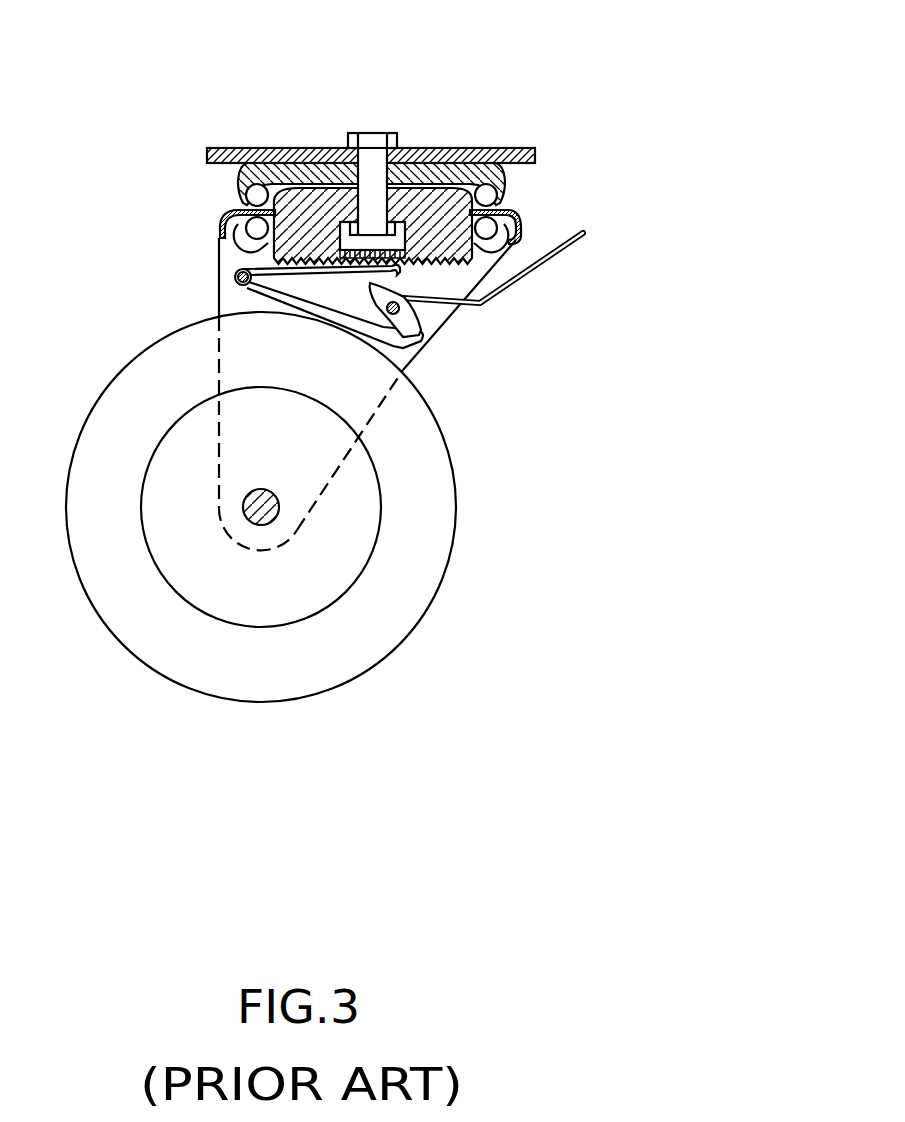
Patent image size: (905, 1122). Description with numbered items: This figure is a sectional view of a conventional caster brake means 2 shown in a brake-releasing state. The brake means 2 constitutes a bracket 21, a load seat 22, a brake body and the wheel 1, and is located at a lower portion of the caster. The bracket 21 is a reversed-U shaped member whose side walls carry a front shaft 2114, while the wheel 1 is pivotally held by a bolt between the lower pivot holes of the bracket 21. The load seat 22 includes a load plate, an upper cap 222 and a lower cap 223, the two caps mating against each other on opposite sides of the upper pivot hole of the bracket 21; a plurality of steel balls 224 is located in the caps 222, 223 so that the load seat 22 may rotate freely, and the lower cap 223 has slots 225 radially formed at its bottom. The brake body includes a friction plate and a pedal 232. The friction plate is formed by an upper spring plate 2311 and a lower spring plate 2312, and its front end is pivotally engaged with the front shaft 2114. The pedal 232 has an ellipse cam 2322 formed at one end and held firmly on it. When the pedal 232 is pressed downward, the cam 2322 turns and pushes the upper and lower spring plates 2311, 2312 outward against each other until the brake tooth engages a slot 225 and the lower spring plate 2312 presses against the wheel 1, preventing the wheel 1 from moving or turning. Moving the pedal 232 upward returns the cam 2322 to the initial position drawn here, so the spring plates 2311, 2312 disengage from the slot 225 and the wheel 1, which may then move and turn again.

The wheel 1 is at (470, 583).
The brake means 2 is at (238, 100).
The bracket 21 is at (230, 298).
The load seat 22 is at (490, 150).
The upper cap 222 is at (505, 187).
The lower cap 223 is at (505, 247).
The steel balls 224 is at (240, 202).
The slots 225 is at (473, 260).
The front shaft 2114 is at (233, 277).
The upper spring plate 2311 is at (263, 270).
The lower spring plate 2312 is at (413, 343).
The pedal 232 is at (584, 233).
The ellipse cam 2322 is at (423, 328).